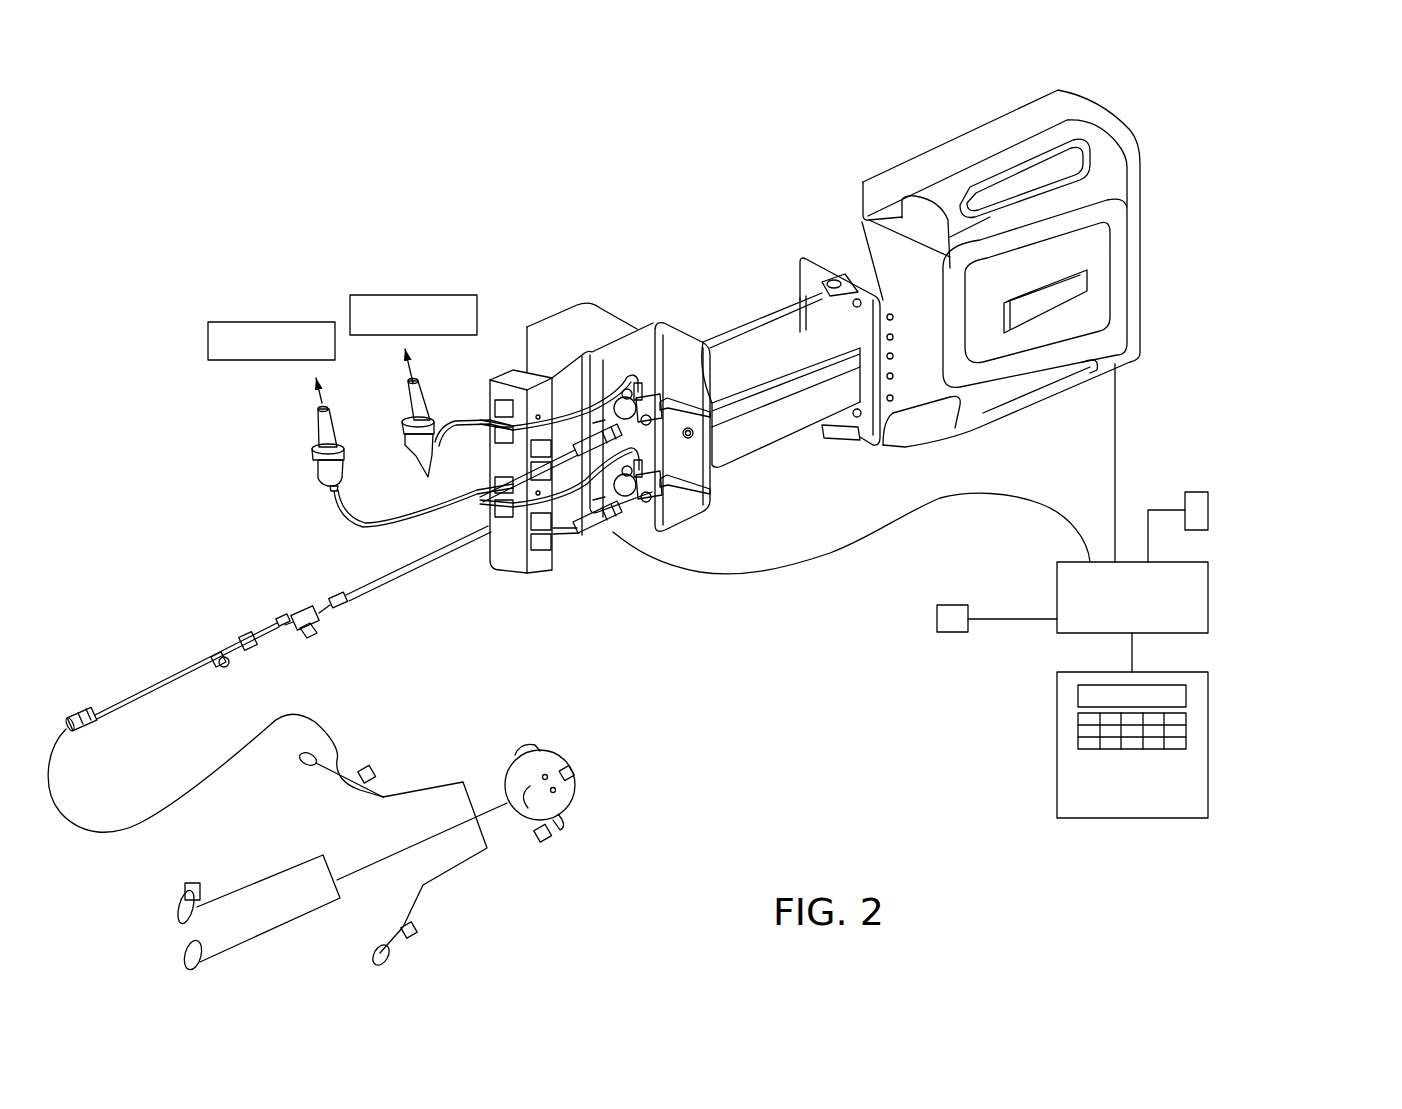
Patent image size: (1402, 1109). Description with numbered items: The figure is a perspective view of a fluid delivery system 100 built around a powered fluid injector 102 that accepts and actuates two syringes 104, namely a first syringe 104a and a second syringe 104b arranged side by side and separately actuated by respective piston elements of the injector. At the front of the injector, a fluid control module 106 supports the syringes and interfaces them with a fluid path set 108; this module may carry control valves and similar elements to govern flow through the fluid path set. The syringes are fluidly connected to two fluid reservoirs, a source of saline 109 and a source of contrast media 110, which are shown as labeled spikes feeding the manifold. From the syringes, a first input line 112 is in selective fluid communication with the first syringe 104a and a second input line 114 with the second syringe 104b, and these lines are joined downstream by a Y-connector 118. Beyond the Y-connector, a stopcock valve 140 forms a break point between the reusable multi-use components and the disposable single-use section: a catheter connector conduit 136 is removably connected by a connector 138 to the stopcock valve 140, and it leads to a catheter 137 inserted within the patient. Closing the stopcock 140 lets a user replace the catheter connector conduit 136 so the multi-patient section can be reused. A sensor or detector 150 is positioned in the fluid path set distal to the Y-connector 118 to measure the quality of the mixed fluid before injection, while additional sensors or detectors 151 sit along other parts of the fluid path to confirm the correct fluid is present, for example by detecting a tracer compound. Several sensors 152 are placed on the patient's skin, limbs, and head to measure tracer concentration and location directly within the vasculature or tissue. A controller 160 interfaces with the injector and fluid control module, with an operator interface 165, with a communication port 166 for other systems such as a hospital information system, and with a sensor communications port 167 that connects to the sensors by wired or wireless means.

The fluid delivery system 100 is at (452, 202).
The powered fluid injector 102 is at (985, 142).
The syringes 104 is at (771, 375).
The first syringe 104a is at (762, 452).
The second syringe 104b is at (730, 347).
The fluid control module 106 is at (577, 438).
The fluid path set 108 is at (260, 659).
The source of saline 109 is at (272, 322).
The source of contrast media 110 is at (413, 295).
The first input line 112 is at (418, 568).
The second input line 114 is at (366, 578).
The Y-connector 118 is at (333, 590).
The catheter connector conduit 136 is at (124, 720).
The catheter 137 is at (112, 833).
The connector 138 is at (285, 605).
The stopcock valve 140 is at (318, 630).
The sensor or detector 150 is at (245, 632).
The sensor or detector 151 is at (495, 455).
The sensor 152 is at (372, 765).
The controller 160 is at (1208, 613).
The operator interface 165 is at (1208, 743).
The communication port 166 is at (1197, 530).
The sensor communications port 167 is at (951, 605).